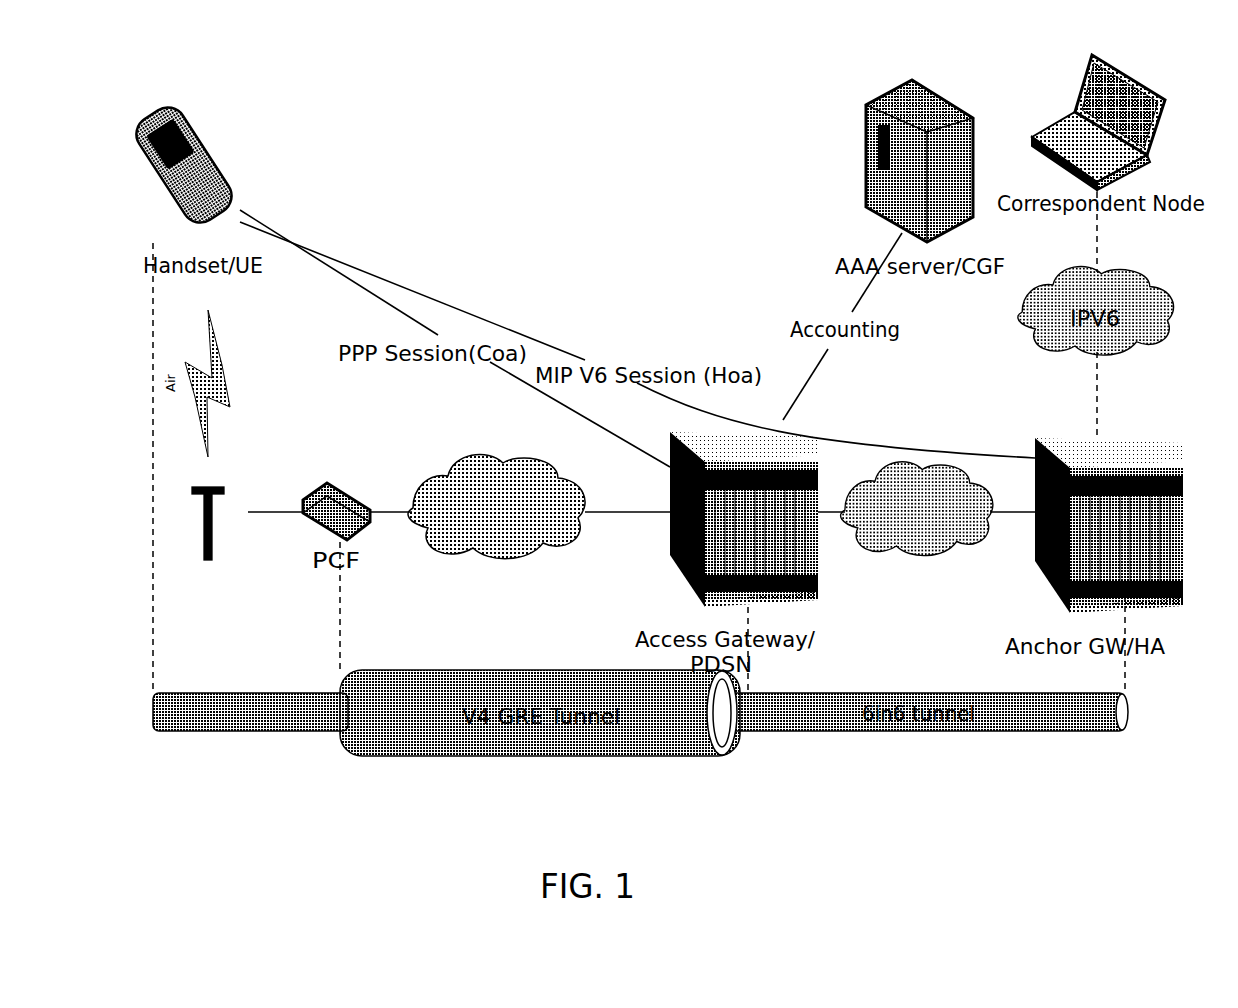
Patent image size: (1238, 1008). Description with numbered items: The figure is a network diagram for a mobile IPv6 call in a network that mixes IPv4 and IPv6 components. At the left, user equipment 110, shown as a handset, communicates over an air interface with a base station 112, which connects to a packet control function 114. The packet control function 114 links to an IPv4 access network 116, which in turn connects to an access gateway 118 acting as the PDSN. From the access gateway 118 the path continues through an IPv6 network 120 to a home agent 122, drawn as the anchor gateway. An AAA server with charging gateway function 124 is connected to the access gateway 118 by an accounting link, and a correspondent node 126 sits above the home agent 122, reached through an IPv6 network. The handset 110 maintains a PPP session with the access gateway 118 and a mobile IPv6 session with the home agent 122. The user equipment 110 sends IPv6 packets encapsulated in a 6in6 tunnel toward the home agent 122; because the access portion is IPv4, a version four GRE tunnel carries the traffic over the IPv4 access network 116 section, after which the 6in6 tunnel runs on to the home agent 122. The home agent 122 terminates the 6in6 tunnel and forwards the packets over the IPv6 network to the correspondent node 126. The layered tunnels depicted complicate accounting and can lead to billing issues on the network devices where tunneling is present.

The user equipment 110 is at (203, 147).
The base station 112 is at (218, 490).
The packet control function 114 is at (350, 490).
The internet protocol version 4 access network 116 is at (485, 460).
The access gateway 118 is at (712, 432).
The internet protocol version 6 network 120 is at (908, 462).
The home agent 122 is at (1152, 443).
The AAA server/charging gateway function 124 is at (975, 120).
The correspondent node 126 is at (1160, 108).